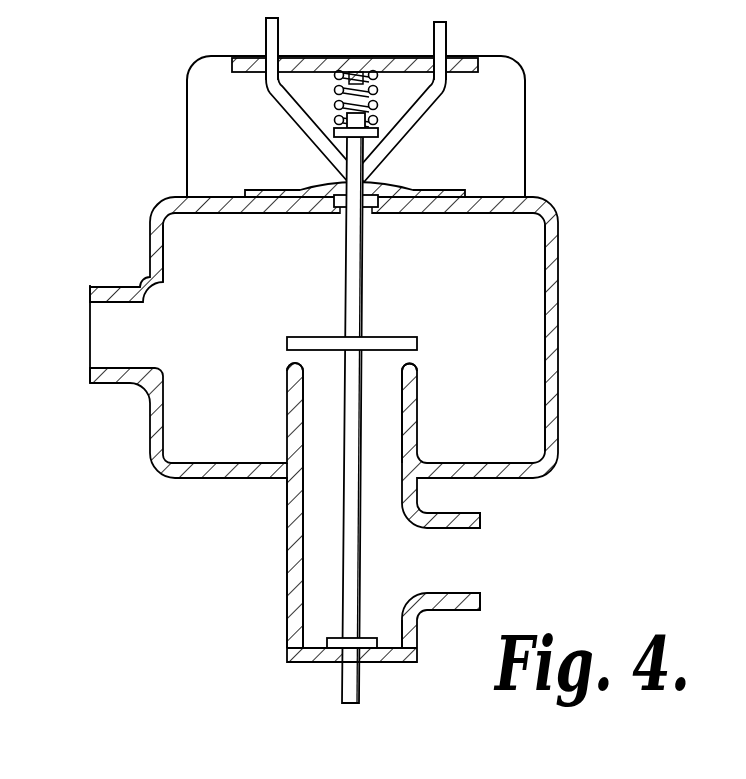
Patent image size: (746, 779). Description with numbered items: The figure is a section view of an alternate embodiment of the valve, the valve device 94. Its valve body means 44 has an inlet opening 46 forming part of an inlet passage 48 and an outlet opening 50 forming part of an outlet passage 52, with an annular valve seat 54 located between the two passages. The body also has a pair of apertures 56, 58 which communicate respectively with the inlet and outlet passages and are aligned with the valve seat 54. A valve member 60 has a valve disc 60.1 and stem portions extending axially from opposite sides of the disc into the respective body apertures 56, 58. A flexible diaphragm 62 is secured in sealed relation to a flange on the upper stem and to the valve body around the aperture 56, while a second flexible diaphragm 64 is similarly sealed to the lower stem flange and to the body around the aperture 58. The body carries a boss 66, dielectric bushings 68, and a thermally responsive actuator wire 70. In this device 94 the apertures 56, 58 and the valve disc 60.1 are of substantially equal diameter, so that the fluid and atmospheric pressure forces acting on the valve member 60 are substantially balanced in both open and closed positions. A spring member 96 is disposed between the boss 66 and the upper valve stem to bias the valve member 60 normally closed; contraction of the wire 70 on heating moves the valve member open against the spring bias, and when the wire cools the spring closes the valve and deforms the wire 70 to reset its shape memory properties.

The valve body means 44 is at (553, 294).
The inlet opening 46 is at (103, 320).
The inlet passage 48 is at (228, 346).
The outlet opening 50 is at (465, 541).
The outlet passage 52 is at (437, 575).
The annular valve seat 54 is at (415, 362).
The valve body aperture 56 is at (388, 208).
The valve body aperture 58 is at (318, 619).
The valve member 60 is at (345, 268).
The valve disc 60.1 is at (385, 337).
The flexible diaphragm 62 is at (315, 187).
The second flexible diaphragm 64 is at (323, 660).
The boss 66 is at (200, 126).
The dielectric bushings 68 is at (264, 56).
The thermally responsive actuator wire 70 is at (280, 104).
The valve device 94 is at (338, 353).
The spring member 96 is at (380, 108).